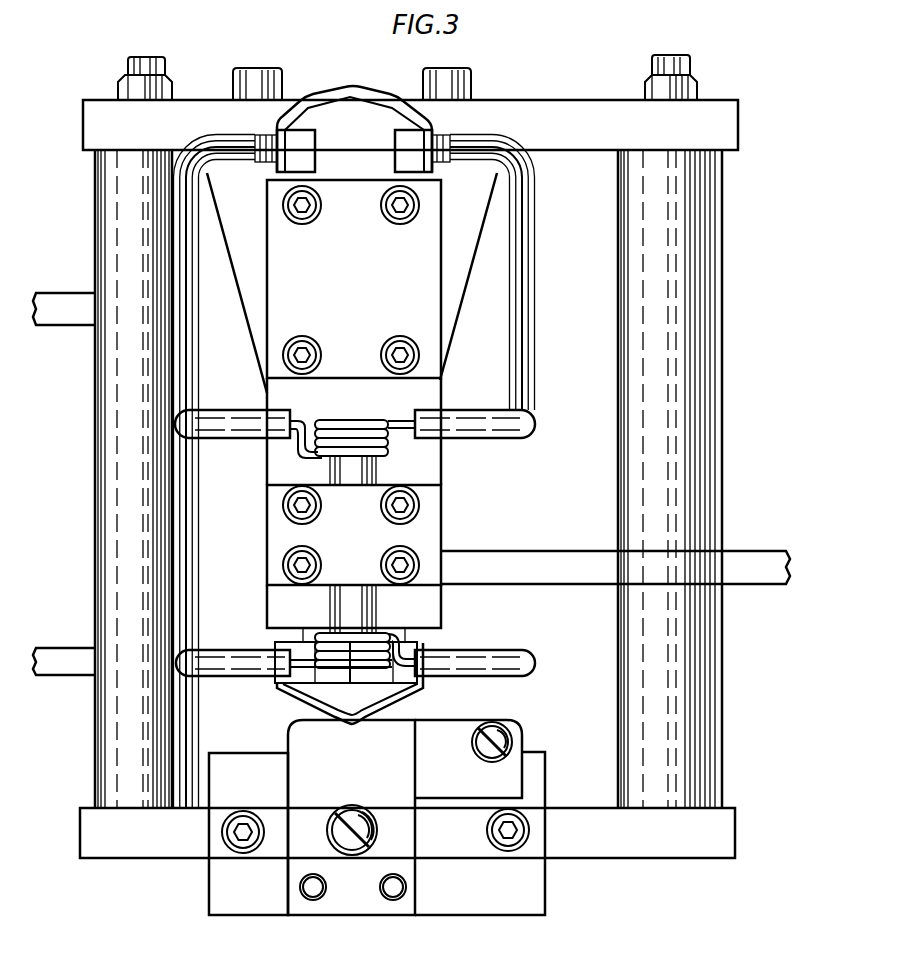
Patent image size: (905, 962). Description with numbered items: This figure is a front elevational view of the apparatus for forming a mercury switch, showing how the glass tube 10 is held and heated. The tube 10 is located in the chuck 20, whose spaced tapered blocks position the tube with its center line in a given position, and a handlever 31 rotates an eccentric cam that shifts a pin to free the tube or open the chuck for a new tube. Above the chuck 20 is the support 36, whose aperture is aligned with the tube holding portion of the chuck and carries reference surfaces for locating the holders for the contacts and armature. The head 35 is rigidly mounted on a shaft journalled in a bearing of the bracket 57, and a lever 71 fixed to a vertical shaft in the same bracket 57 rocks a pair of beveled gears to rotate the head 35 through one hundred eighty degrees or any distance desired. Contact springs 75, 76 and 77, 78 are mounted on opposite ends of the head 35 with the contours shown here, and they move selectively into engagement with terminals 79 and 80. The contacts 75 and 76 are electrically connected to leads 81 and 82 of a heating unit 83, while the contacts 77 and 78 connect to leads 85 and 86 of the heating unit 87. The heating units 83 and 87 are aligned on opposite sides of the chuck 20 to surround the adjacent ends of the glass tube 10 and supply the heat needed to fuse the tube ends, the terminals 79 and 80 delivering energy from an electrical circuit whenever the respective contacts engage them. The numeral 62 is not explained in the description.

The glass tube 10 is at (372, 480).
The chuck 20 is at (459, 539).
The handlever 31 is at (762, 558).
The head 35 is at (442, 462).
The support 36 is at (458, 221).
The bracket 57 is at (458, 302).
The arm 62 is at (72, 323).
The lever 71 is at (60, 655).
The contact spring 75 is at (285, 700).
The contact spring 76 is at (430, 698).
The contact spring 77 is at (320, 100).
The contact spring 78 is at (393, 105).
The terminal 79 is at (462, 790).
The terminal 80 is at (292, 740).
The lead 81 is at (236, 658).
The lead 82 is at (505, 660).
The heating unit 83 is at (355, 662).
The lead 85 is at (192, 306).
The lead 86 is at (533, 322).
The heating unit 87 is at (362, 428).